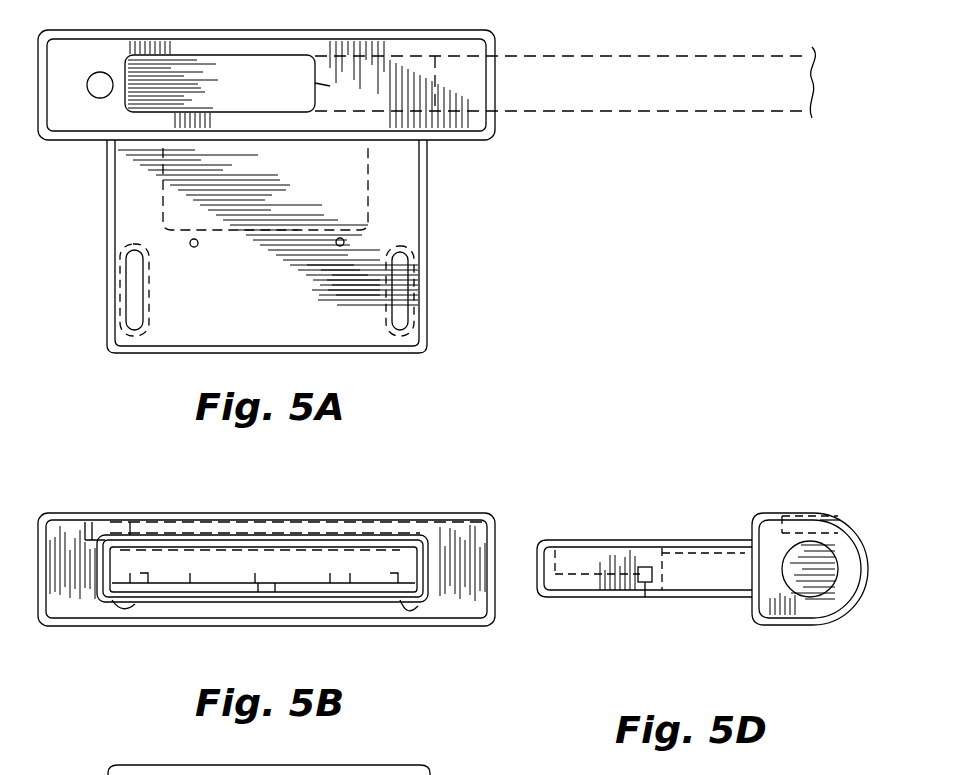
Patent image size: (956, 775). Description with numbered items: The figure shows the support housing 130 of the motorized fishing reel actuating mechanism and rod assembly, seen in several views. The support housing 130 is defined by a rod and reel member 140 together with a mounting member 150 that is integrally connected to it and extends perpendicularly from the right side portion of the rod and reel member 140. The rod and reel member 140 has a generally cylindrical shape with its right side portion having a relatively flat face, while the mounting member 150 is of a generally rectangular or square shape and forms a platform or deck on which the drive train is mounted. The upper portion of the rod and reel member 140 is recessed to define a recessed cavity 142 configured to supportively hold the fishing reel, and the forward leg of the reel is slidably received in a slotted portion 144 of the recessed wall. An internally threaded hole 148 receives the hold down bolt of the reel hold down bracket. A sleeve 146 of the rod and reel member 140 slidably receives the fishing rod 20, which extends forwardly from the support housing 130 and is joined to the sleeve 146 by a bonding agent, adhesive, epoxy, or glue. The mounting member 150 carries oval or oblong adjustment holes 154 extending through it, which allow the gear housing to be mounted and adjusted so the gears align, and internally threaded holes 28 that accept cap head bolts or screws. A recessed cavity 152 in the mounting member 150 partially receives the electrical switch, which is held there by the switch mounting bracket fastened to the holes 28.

In FIG. 5A, the fishing rod 20 is at (689, 113).
In FIG. 5A, the internally threaded holes 28 is at (338, 245).
In FIG. 5D, the internally threaded holes 28 is at (645, 600).
In FIG. 5A, the support housing 130 is at (598, 295).
In FIG. 5A, the rod and reel member 140 is at (98, 98).
In FIG. 5B, the rod and reel member 140 is at (82, 630).
In FIG. 5D, the rod and reel member 140 is at (790, 626).
In FIG. 5A, the recessed cavity 142 is at (270, 101).
In FIG. 5D, the recessed cavity 142 is at (790, 515).
In FIG. 5A, the slotted portion 144 is at (312, 84).
In FIG. 5B, the slotted portion 144 is at (356, 530).
In FIG. 5D, the slotted portion 144 is at (835, 520).
In FIG. 5D, the sleeve 146 is at (806, 592).
In FIG. 5B, the internally threaded hole 148 is at (100, 515).
In FIG. 5B, the mounting member 150 is at (272, 600).
In FIG. 5D, the mounting member 150 is at (609, 540).
In FIG. 5A, the recessed cavity 152 is at (290, 188).
In FIG. 5D, the recessed cavity 152 is at (723, 583).
In FIG. 5A, the adjustment holes 154 is at (128, 290).
In FIG. 5B, the adjustment holes 154 is at (133, 603).
In FIG. 5D, the adjustment holes 154 is at (590, 600).